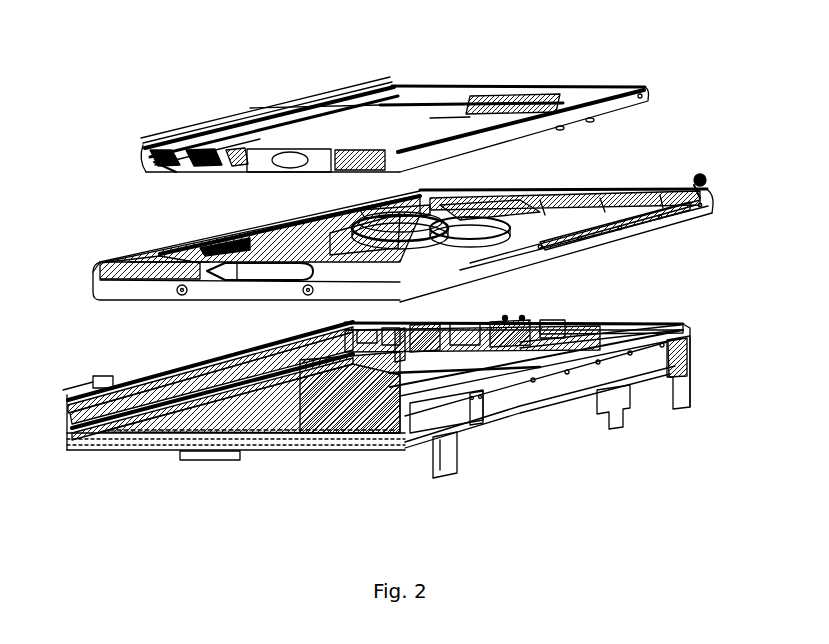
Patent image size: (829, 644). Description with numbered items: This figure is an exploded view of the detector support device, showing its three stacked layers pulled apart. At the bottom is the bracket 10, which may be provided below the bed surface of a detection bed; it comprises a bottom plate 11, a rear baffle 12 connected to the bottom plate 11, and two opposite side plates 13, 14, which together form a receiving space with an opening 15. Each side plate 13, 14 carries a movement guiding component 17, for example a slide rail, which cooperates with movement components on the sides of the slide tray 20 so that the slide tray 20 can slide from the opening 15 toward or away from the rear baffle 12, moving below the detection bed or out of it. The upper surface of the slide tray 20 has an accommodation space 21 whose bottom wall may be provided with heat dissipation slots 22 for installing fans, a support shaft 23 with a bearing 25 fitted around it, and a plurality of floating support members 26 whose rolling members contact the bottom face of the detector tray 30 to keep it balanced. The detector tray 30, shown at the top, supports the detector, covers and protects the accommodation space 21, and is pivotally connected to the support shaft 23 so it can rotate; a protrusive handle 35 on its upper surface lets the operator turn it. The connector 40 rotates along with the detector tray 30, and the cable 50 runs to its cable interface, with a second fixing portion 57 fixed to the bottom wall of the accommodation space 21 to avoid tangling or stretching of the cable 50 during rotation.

The bracket 10 is at (172, 366).
The bottom plate 11 is at (328, 443).
The rear baffle 12 is at (540, 347).
The side plate 13 is at (68, 442).
The side plate 14 is at (553, 390).
The opening 15 is at (236, 443).
The movement guiding component 17 is at (138, 420).
The slide tray 20 is at (250, 237).
The accommodation space 21 is at (373, 226).
The heat dissipation slot 22 is at (597, 185).
The support shaft 23 is at (447, 203).
The bearing 25 is at (382, 255).
The floating support member 26 is at (633, 208).
The detector tray 30 is at (320, 130).
The protrusive handle 35 is at (170, 170).
The connector 40 is at (235, 132).
The cable 50 is at (455, 238).
The second fixing portion 57 is at (505, 315).